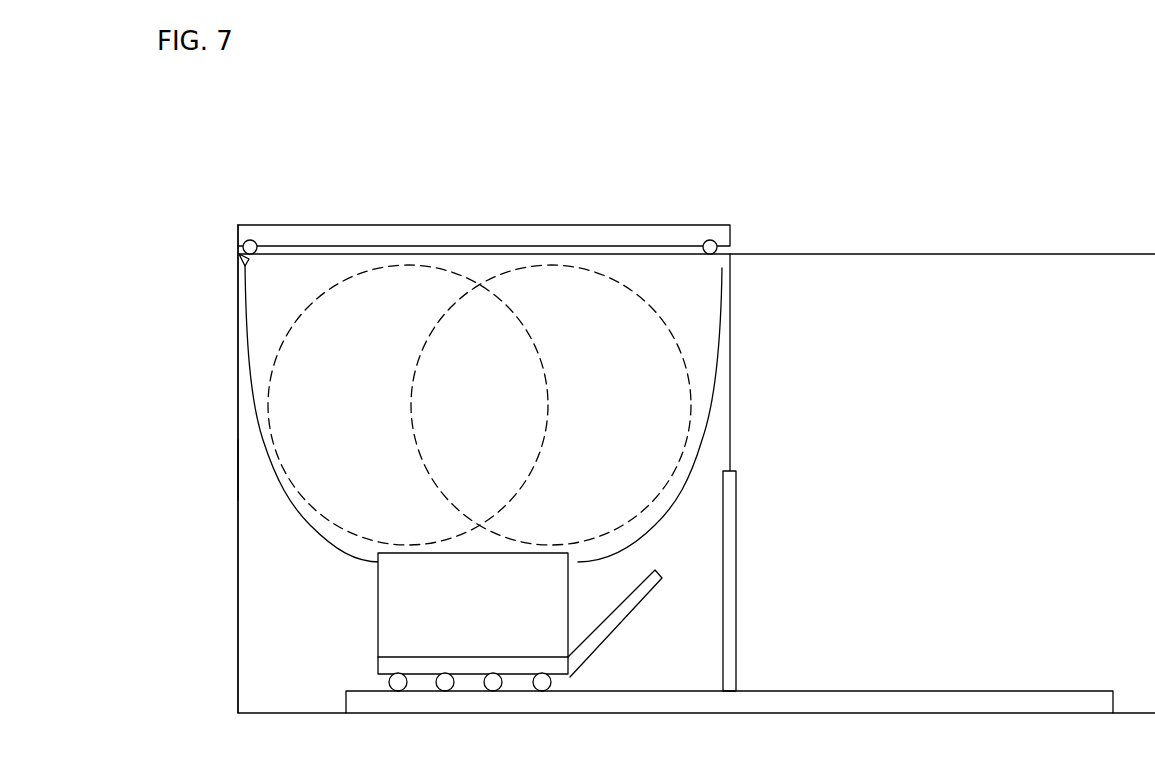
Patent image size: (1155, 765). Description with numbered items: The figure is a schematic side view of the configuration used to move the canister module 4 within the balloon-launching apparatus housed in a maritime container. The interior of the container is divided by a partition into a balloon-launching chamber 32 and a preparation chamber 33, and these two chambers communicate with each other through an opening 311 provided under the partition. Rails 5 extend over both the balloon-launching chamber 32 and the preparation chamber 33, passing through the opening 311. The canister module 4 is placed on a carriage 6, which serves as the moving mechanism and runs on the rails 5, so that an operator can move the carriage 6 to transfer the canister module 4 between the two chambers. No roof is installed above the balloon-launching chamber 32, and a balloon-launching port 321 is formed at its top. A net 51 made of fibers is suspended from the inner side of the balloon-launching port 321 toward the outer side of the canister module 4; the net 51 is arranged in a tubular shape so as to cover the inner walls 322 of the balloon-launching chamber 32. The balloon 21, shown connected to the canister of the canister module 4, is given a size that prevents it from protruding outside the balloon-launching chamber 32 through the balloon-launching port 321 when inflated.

The canister module 4 is at (569, 606).
The rails 5 is at (985, 691).
The carriage 6 is at (603, 638).
The balloon 21 is at (304, 312).
The balloon-launching chamber 32 is at (238, 328).
The preparation chamber 33 is at (854, 254).
The net 51 is at (302, 517).
The opening 311 is at (736, 476).
The balloon-launching port 321 is at (239, 254).
The inner walls 322 is at (238, 470).